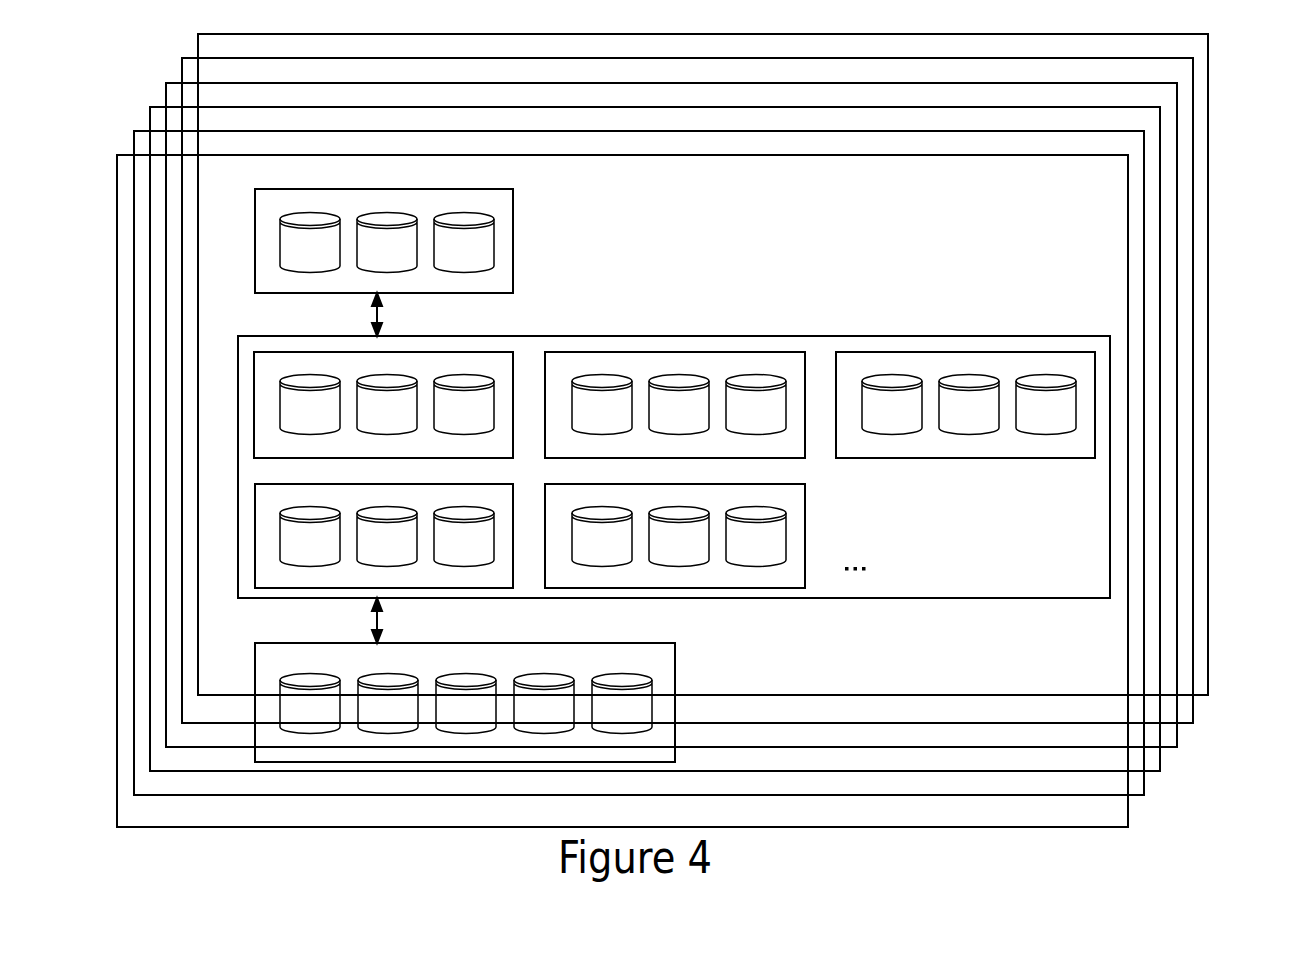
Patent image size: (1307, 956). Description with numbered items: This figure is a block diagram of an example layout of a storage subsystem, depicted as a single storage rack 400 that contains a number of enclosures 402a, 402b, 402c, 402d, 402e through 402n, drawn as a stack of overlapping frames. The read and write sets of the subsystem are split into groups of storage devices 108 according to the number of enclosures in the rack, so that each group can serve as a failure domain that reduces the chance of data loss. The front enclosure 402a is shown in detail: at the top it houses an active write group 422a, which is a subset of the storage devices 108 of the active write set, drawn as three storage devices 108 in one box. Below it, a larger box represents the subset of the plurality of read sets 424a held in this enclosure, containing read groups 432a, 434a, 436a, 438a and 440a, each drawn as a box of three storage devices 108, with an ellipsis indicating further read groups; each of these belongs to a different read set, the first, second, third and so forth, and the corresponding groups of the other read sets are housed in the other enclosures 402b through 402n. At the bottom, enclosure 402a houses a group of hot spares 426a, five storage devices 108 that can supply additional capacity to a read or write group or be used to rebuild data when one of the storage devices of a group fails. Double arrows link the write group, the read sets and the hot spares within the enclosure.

The storage rack 400 is at (694, 454).
The enclosure 402a is at (1128, 827).
The enclosure 402b is at (1144, 795).
The enclosure 402c is at (1160, 771).
The enclosure 402d is at (1177, 747).
The enclosure 402e is at (1193, 723).
The enclosure 402n is at (1208, 695).
The storage device 108 is at (296, 253).
The active write group 422a is at (255, 229).
The read sets 424a is at (238, 413).
The group of hot spares 426a is at (255, 682).
The read group 432a is at (488, 352).
The read group 434a is at (663, 352).
The read group 436a is at (917, 352).
The read group 438a is at (270, 588).
The read group 440a is at (763, 588).